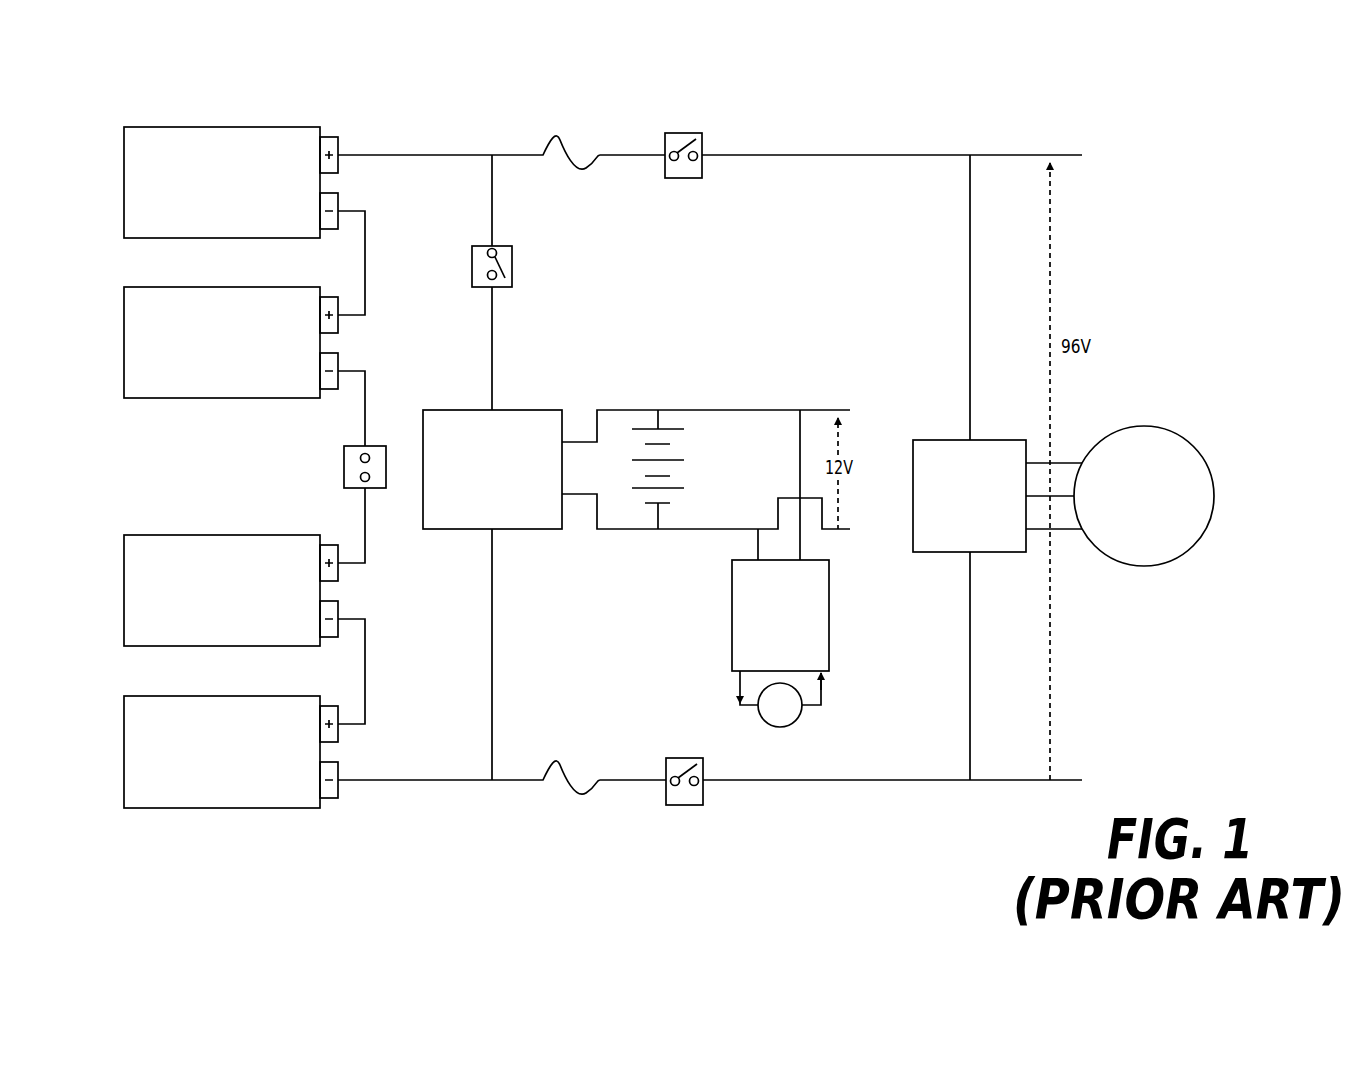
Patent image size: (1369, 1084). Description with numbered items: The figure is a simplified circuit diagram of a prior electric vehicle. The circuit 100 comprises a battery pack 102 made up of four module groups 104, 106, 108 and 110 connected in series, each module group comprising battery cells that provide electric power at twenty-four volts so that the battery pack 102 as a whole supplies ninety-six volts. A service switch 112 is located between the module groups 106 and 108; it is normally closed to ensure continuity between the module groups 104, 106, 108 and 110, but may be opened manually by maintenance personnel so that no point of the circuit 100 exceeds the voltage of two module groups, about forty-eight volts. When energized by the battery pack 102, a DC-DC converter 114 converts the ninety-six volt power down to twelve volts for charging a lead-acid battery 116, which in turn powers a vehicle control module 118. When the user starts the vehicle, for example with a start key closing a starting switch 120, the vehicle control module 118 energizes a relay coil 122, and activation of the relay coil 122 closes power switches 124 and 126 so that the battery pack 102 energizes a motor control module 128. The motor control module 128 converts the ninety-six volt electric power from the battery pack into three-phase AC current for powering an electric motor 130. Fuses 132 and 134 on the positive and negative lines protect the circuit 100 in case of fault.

The circuit 100 is at (1096, 237).
The battery pack 102 is at (362, 134).
The module group 104 is at (124, 762).
The module group 106 is at (124, 598).
The module group 108 is at (124, 345).
The module group 110 is at (124, 190).
The service switch 112 is at (344, 468).
The DC-DC converter 114 is at (525, 410).
The lead-acid battery 116 is at (694, 450).
The vehicle control module 118 is at (829, 615).
The starting switch 120 is at (512, 262).
The relay coil 122 is at (790, 725).
The power switch 124 is at (688, 133).
The power switch 126 is at (680, 758).
The motor control module 128 is at (940, 440).
The electric motor 130 is at (1152, 428).
The fuse 132 is at (558, 137).
The fuse 134 is at (556, 762).